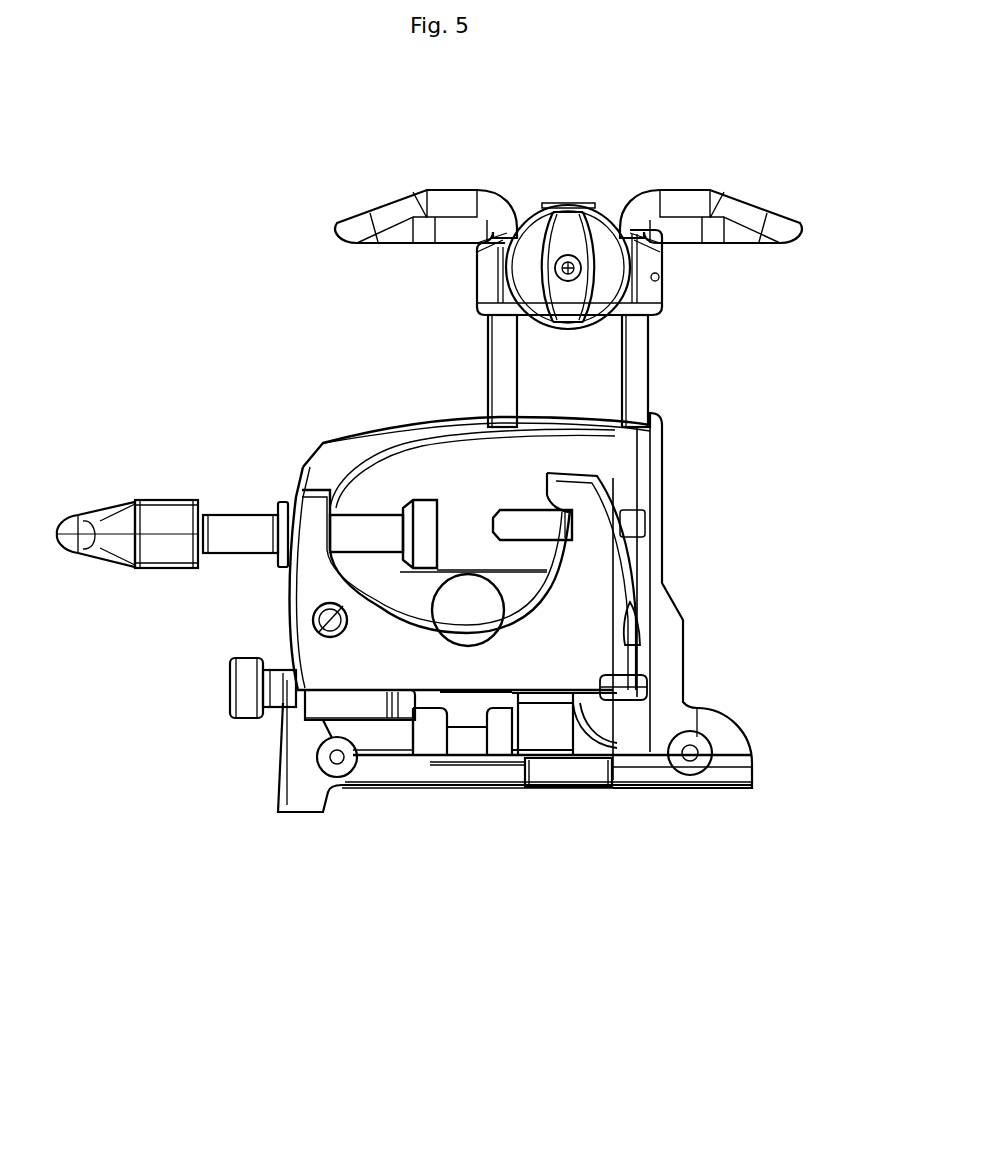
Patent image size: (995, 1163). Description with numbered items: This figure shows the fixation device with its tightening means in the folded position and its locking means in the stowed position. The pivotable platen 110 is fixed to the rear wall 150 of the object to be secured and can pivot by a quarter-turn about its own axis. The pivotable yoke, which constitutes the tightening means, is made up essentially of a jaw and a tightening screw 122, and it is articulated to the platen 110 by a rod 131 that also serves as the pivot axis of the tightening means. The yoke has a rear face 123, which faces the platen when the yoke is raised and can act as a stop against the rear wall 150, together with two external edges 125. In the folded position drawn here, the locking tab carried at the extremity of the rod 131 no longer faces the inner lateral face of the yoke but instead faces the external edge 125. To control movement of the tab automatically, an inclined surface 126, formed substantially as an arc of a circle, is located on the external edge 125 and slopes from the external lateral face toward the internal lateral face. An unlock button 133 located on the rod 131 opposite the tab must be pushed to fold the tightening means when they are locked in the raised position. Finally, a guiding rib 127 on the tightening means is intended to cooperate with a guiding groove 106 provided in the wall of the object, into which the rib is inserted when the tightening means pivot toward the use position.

The guiding groove 106 is at (465, 738).
The pivotable platen 110 is at (507, 597).
The tightening screw 122 is at (242, 540).
The rear face of the yoke 123 is at (378, 692).
The external edge 125 is at (620, 560).
The inclined surface 126 is at (640, 637).
The guiding rib 127 is at (468, 703).
The rod 131 is at (287, 695).
The unlock button 133 is at (245, 698).
The rear wall of the object to be secured 150 is at (617, 462).